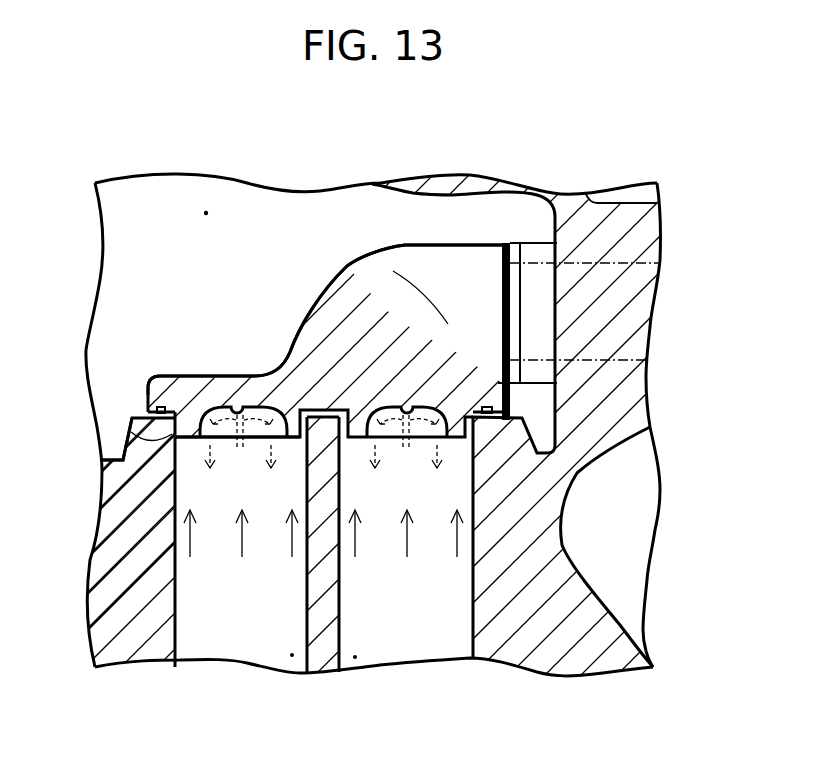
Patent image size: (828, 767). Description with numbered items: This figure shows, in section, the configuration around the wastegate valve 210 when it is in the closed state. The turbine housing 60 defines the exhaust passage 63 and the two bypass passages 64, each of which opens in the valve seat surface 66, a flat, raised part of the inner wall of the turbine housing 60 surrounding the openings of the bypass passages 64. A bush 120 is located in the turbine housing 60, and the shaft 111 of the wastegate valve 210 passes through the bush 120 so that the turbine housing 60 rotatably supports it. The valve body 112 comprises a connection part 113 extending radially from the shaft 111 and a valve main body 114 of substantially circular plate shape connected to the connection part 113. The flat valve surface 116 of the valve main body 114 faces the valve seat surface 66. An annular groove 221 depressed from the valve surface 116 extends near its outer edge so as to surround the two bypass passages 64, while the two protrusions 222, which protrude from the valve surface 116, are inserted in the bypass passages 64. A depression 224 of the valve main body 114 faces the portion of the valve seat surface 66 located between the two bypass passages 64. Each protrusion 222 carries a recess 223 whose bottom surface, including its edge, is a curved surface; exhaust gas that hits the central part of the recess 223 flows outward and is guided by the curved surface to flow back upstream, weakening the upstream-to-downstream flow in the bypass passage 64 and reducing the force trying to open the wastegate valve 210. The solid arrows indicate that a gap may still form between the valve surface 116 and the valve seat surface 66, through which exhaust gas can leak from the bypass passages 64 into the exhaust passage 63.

The turbine housing 60 is at (641, 385).
The wastegate valve 210 is at (457, 243).
The valve body 112 is at (367, 263).
The connection part 113 is at (320, 291).
The depression 224 is at (282, 360).
The valve main body 114 is at (166, 375).
The recess 223 is at (233, 405).
The valve seat surface 66 is at (326, 410).
The bush 120 is at (542, 242).
The shaft 111 is at (630, 263).
The exhaust passage 63 is at (206, 213).
The annular groove 221 is at (155, 413).
The valve surface 116 is at (131, 432).
The protrusion 222 is at (300, 450).
The bypass passage 64 is at (292, 657).